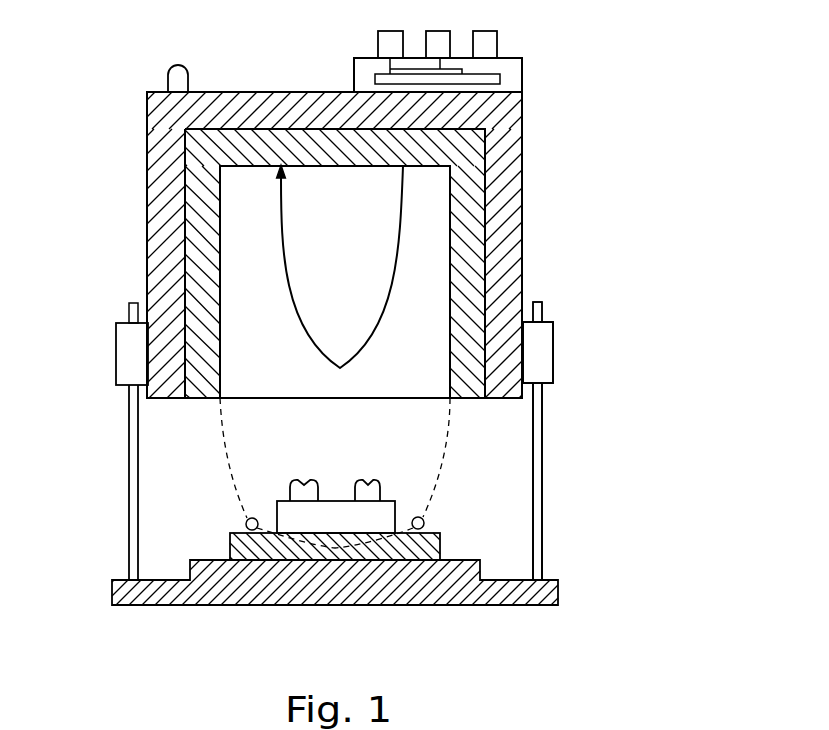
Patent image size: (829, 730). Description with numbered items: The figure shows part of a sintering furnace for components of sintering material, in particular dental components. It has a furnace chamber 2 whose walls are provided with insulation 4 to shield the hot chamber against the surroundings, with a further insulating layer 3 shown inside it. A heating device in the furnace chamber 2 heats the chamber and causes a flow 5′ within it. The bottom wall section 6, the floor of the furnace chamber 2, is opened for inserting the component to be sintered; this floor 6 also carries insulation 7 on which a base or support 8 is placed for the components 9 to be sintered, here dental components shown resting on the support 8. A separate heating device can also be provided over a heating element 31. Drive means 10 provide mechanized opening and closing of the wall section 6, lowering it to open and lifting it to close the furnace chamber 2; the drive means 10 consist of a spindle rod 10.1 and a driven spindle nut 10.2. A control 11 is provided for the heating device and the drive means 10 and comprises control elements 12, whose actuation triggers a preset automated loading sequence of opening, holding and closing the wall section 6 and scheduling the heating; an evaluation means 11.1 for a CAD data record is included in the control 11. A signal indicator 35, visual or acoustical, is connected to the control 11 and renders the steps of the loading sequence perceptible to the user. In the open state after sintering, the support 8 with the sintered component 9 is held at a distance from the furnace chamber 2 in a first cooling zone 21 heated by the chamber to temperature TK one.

The furnace chamber 2 is at (438, 278).
The inner insulation layer 3 is at (508, 200).
The insulation 4 is at (470, 150).
The flow 5′ is at (283, 228).
The wall section 6 is at (288, 592).
The insulation 7 is at (357, 548).
The support 8 is at (370, 523).
The components 9 is at (367, 495).
The drive means 10 is at (565, 380).
The spindle rod 10.1 is at (537, 435).
The driven spindle nut 10.2 is at (540, 338).
The control 11 is at (512, 79).
The evaluation means 11.1 is at (378, 79).
The control elements 12 is at (497, 42).
The first cooling zone 21 is at (232, 477).
The heating element 31 is at (247, 519).
The signal indicator 35 is at (168, 80).